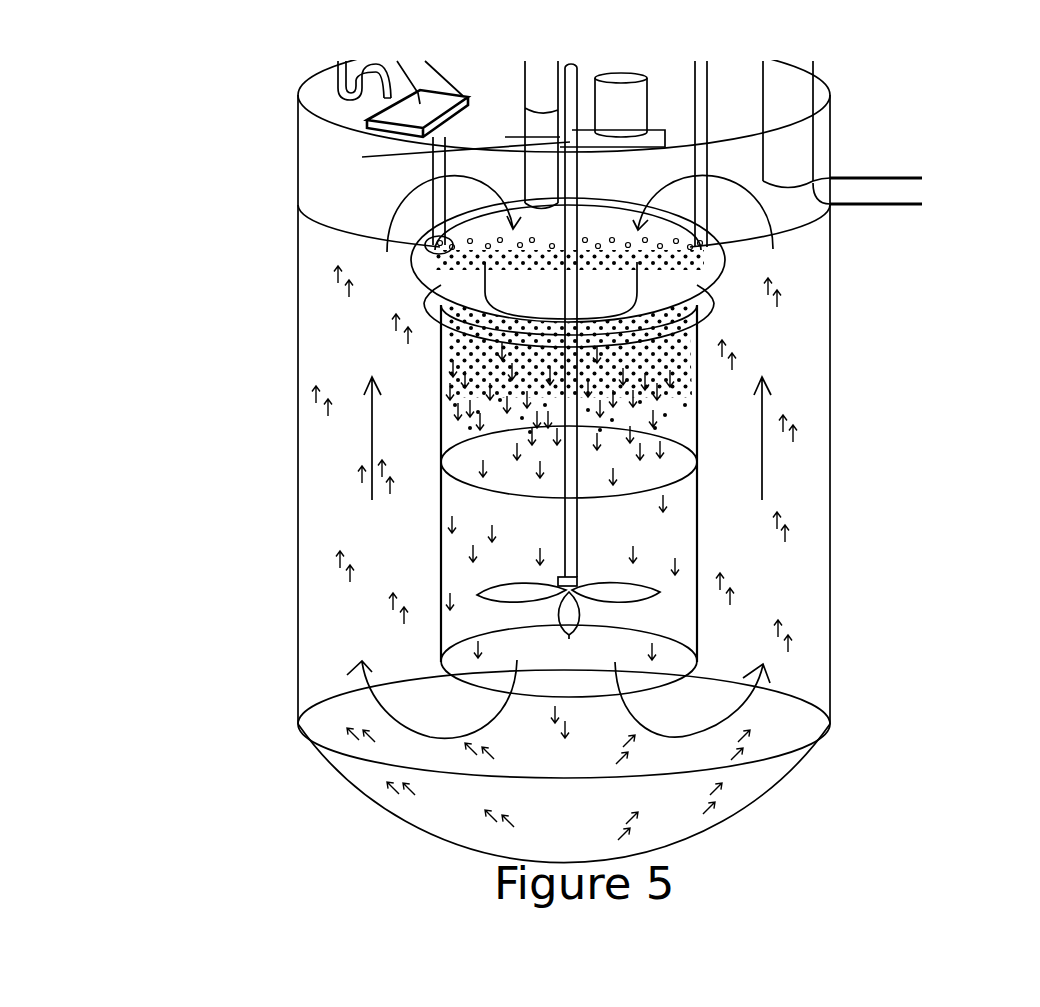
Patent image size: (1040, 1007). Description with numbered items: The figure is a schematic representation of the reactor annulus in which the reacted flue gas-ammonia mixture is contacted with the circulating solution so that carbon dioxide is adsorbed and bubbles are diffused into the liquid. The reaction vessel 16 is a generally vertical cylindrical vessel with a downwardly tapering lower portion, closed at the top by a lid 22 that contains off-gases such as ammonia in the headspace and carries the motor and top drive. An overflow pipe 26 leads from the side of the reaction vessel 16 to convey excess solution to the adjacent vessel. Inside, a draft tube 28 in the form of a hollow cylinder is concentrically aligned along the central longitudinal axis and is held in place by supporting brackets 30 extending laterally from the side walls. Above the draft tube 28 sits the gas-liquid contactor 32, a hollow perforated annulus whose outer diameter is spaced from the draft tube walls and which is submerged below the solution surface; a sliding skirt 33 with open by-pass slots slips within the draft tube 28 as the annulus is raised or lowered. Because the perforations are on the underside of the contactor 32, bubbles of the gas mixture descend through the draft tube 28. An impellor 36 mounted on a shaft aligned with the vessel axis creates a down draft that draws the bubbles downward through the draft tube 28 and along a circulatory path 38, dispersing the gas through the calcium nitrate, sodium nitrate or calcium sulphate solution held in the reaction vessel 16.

The reaction vessel 16 is at (297, 312).
The lid 22 is at (648, 130).
The overflow pipe 26 is at (860, 177).
The draft tube 28 is at (697, 500).
The supporting brackets 30 is at (932, 400).
The gas-liquid contactor 32 is at (698, 272).
The sliding skirt 33 is at (672, 397).
The impellor 36 is at (811, 465).
The circulatory path 38 is at (372, 500).